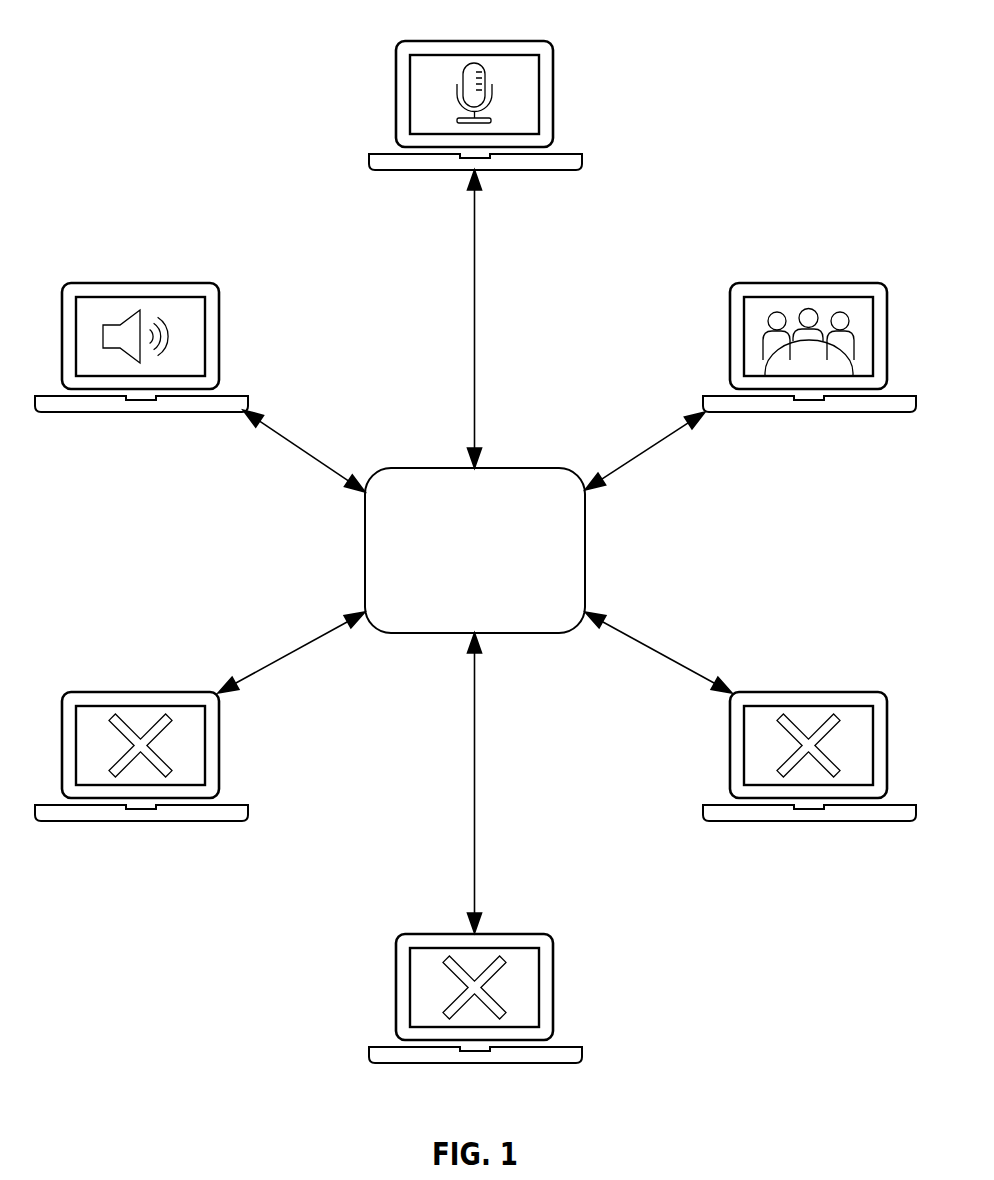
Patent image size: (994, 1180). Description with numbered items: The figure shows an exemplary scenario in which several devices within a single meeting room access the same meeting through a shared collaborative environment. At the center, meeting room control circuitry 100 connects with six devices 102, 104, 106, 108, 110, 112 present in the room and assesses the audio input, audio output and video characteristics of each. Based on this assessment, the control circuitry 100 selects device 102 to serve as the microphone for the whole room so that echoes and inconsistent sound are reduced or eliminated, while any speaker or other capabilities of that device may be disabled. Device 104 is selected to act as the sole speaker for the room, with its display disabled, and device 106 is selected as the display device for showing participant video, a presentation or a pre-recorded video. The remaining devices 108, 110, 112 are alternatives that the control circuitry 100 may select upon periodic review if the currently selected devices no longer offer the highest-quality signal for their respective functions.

The meeting room control circuitry 100 is at (428, 468).
The device 102 is at (433, 41).
The device 104 is at (101, 283).
The device 106 is at (769, 283).
The device 108 is at (101, 692).
The device 110 is at (769, 692).
The device 112 is at (428, 934).